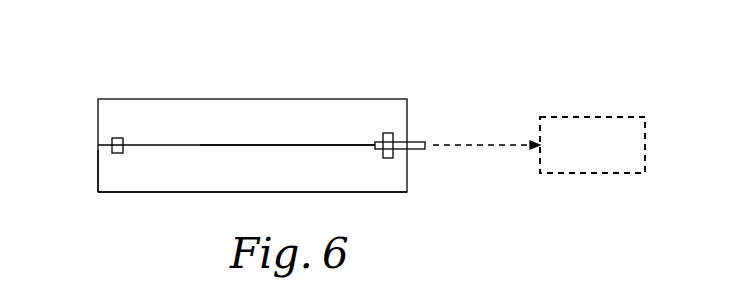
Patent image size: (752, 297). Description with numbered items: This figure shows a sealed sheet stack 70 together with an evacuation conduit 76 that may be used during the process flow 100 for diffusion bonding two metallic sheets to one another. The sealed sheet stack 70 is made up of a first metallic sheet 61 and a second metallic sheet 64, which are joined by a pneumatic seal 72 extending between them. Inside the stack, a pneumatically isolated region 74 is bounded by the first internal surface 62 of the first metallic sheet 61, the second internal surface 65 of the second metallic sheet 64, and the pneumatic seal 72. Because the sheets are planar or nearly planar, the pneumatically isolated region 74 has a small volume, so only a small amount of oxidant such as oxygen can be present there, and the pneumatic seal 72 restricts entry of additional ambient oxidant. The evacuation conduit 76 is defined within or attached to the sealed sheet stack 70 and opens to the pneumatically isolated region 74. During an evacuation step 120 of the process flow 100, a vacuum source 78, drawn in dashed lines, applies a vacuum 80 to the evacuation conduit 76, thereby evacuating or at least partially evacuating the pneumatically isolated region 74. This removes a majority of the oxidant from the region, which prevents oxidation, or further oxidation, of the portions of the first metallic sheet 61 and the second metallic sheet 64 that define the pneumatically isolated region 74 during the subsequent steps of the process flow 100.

The first metallic sheet 61 is at (96, 101).
The first internal surface 62 is at (205, 145).
The second metallic sheet 64 is at (97, 165).
The second internal surface 65 is at (303, 145).
The sealed sheet stack 70 is at (108, 210).
The pneumatic seal 72 is at (105, 131).
The pneumatically isolated region 74 is at (237, 152).
The evacuation conduit 76 is at (415, 150).
The vacuum source 78 is at (645, 167).
The vacuum 80 is at (478, 144).
The process flow 100 is at (668, 78).
The evacuation step 120 is at (670, 134).